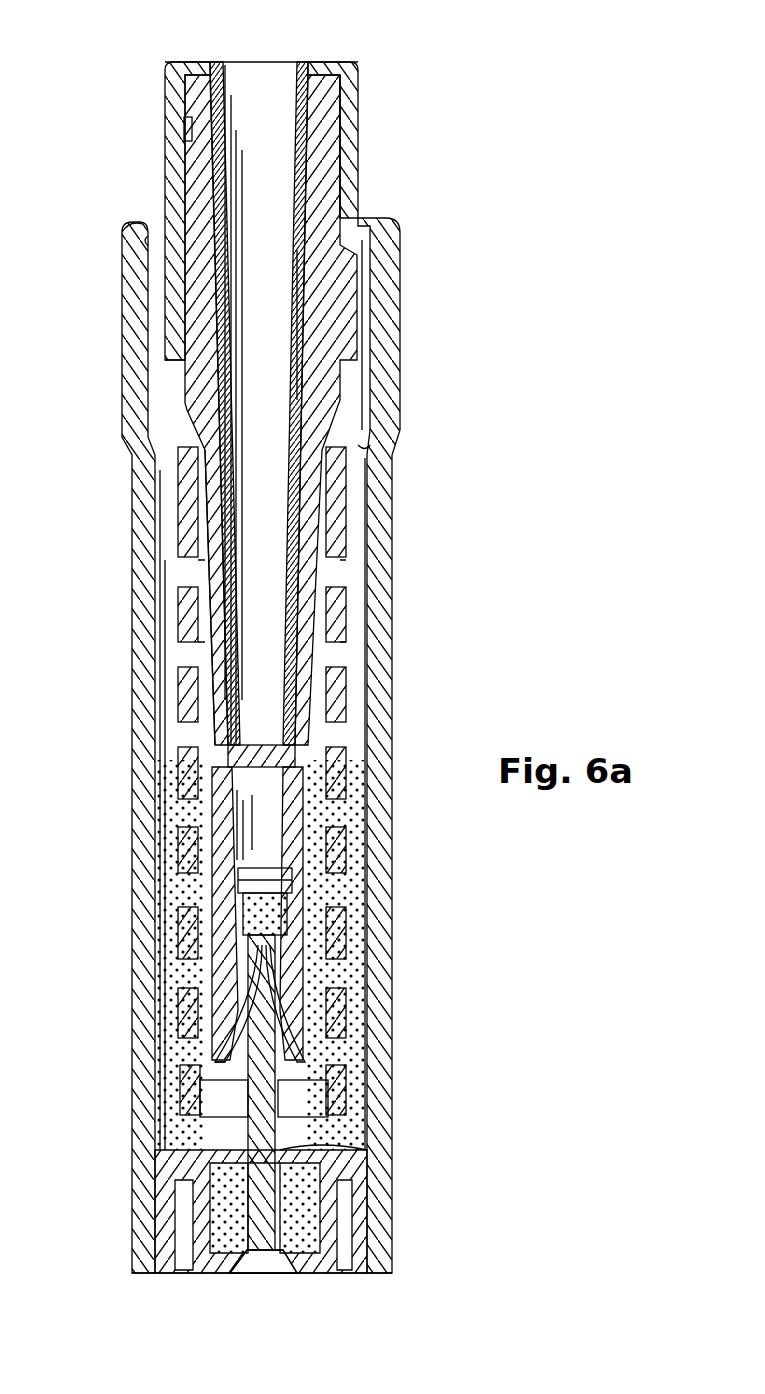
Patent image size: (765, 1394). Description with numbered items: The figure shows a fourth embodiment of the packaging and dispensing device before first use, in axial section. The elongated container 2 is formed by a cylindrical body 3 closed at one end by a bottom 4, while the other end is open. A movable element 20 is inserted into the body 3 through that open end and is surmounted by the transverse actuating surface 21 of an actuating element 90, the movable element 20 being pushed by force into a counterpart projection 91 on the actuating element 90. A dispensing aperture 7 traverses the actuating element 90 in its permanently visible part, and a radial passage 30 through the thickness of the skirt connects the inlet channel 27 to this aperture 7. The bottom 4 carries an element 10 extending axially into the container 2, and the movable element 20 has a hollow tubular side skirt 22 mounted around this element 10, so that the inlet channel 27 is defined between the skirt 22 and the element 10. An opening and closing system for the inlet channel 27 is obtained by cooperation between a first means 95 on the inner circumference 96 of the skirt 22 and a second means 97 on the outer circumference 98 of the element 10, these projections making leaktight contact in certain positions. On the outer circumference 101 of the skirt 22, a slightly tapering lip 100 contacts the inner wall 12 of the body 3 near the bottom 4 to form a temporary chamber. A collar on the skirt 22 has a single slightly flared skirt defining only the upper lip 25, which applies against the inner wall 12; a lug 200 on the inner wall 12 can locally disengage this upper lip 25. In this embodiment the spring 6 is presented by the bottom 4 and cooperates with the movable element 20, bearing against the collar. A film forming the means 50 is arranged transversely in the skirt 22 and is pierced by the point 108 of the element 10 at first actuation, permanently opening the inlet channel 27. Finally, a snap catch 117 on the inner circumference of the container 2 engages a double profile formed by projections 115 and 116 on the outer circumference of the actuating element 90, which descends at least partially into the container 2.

The container 2 is at (342, 655).
The body 3 is at (378, 568).
The bottom 4 is at (213, 1273).
The spring 6 is at (335, 530).
The dispensing aperture 7 is at (172, 128).
The element 10 is at (322, 1090).
The inner wall 12 is at (165, 1115).
The movable element 20 is at (318, 300).
The transverse actuating surface 21 is at (318, 62).
The hollow tubular side skirt 22 is at (300, 726).
The upper annular lip 25 is at (365, 455).
The inlet channel 27 is at (210, 732).
The radial passage 30 is at (198, 62).
The means 50 is at (268, 878).
The actuating element 90 is at (340, 176).
The counterpart projection 91 is at (300, 335).
The first means 95 is at (232, 1010).
The inner circumference 96 is at (240, 795).
The second means 97 is at (292, 1045).
The outer circumference 98 is at (305, 1150).
The lip 100 is at (180, 1075).
The outer circumference 101 is at (208, 890).
The point 108 is at (264, 985).
The projection 115 is at (152, 260).
The projection 116 is at (140, 225).
The snap-on catch 117 is at (146, 238).
The lug 200 is at (150, 540).